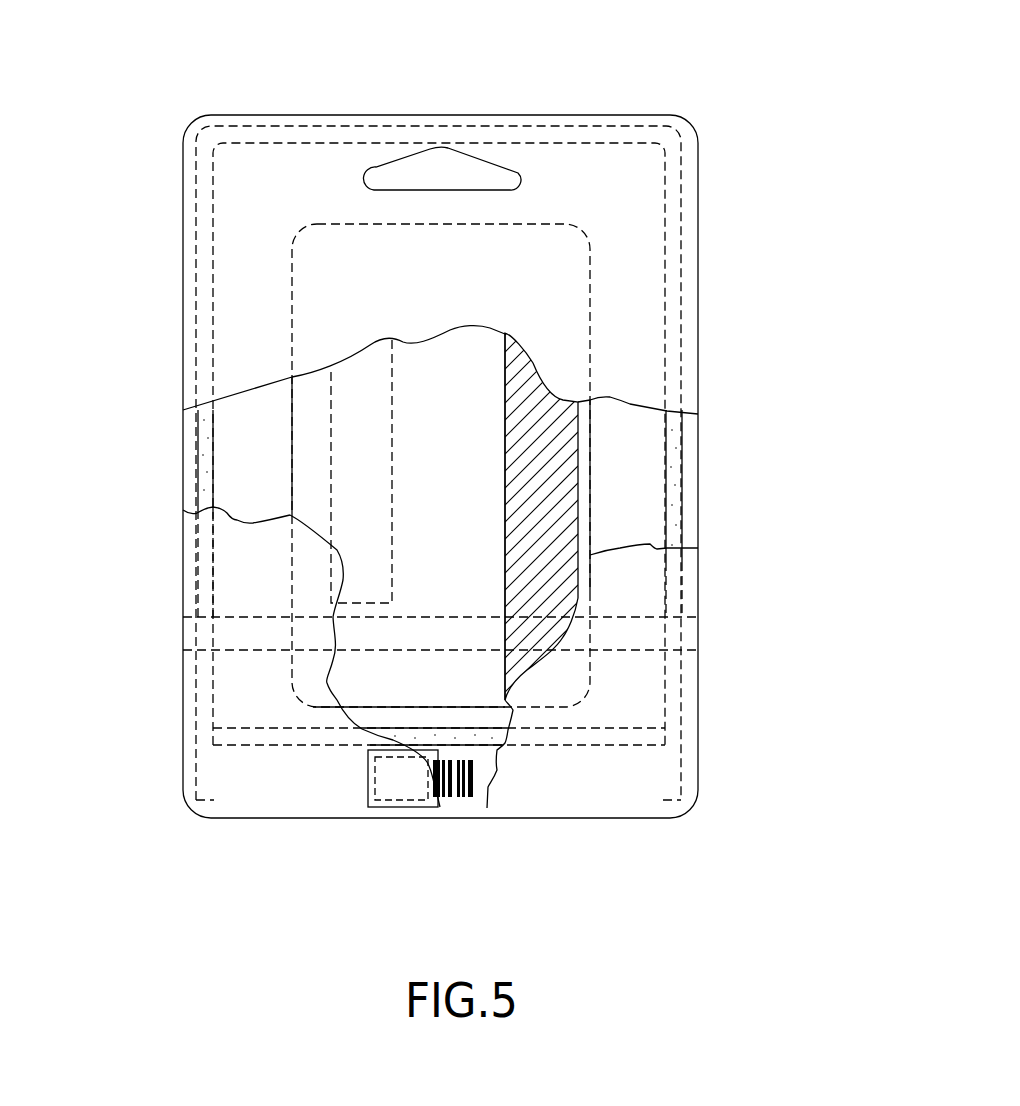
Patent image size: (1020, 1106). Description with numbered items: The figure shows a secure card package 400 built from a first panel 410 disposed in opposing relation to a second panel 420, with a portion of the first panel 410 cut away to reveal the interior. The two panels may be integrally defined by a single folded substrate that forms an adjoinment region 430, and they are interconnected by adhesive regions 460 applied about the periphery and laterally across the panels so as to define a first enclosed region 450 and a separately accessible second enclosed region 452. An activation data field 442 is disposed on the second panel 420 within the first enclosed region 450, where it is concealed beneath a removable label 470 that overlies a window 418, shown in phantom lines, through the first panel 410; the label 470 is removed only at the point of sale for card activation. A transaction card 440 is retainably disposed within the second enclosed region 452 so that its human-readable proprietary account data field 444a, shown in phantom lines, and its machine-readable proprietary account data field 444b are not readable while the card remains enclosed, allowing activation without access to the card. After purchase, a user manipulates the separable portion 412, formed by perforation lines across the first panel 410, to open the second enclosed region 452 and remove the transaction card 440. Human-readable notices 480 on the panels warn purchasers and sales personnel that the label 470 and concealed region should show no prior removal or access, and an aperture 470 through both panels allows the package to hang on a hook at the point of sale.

The secure card package 400 is at (607, 104).
The first panel 410 is at (227, 313).
The separable portion 412 is at (232, 618).
The window 418 is at (397, 800).
The second panel 420 is at (183, 418).
The adjoinment region 430 is at (593, 808).
The transaction card 440 is at (290, 493).
The activation data field 442 is at (473, 775).
The human-readable proprietary account data field 444a is at (330, 438).
The machine-readable proprietary account data field 444b is at (573, 432).
The first enclosed region 450 is at (470, 800).
The second enclosed region 452 is at (640, 481).
The adhesive regions 460 is at (200, 200).
The removable label 470 is at (435, 165).
The human-readable notices 480 is at (232, 262).